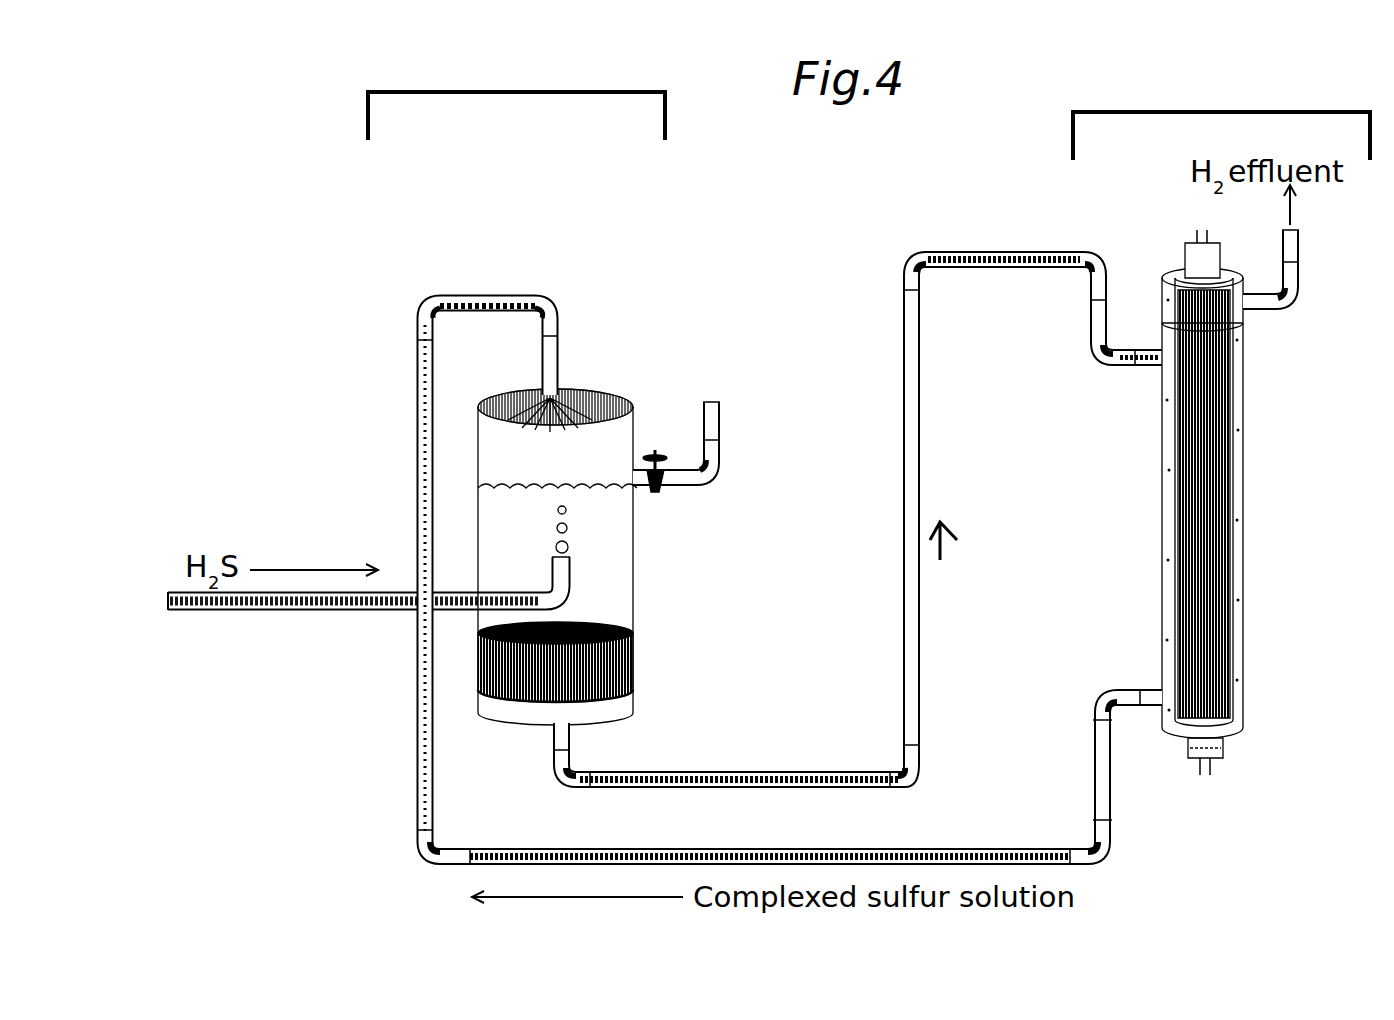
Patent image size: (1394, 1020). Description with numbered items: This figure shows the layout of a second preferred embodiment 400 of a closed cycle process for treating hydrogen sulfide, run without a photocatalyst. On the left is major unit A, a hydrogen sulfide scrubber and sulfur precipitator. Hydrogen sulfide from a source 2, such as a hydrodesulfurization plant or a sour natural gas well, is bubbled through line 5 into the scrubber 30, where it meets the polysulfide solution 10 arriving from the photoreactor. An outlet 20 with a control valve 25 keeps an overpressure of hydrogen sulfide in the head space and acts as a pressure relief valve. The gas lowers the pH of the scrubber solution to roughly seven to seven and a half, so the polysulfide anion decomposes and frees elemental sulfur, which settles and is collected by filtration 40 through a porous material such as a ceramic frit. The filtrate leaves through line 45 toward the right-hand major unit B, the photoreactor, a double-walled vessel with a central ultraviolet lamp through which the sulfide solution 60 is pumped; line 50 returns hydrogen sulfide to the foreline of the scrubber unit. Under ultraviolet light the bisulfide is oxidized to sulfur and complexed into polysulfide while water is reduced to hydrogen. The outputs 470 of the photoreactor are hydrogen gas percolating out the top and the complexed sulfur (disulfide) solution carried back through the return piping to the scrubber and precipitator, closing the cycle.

The second preferred embodiment 400 is at (357, 226).
The source 2 is at (154, 601).
The line 5 is at (355, 612).
The polysulfide solution 10 is at (560, 322).
The outlet 20 is at (686, 422).
The control valve 25 is at (662, 451).
The scrubber 30 is at (612, 540).
The filtration 40 is at (615, 673).
The line 45 is at (770, 783).
The line 50 is at (1210, 265).
The sulfide solution 60 is at (1250, 535).
The outputs 470 is at (1112, 800).